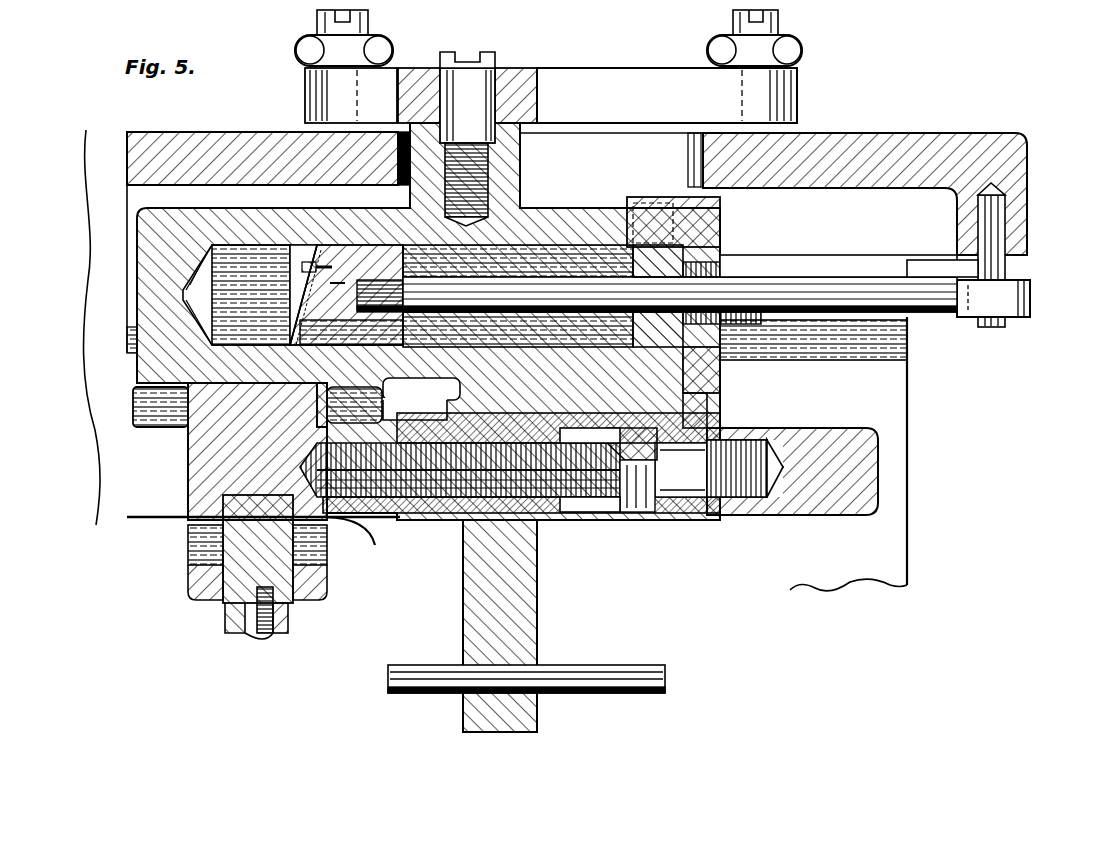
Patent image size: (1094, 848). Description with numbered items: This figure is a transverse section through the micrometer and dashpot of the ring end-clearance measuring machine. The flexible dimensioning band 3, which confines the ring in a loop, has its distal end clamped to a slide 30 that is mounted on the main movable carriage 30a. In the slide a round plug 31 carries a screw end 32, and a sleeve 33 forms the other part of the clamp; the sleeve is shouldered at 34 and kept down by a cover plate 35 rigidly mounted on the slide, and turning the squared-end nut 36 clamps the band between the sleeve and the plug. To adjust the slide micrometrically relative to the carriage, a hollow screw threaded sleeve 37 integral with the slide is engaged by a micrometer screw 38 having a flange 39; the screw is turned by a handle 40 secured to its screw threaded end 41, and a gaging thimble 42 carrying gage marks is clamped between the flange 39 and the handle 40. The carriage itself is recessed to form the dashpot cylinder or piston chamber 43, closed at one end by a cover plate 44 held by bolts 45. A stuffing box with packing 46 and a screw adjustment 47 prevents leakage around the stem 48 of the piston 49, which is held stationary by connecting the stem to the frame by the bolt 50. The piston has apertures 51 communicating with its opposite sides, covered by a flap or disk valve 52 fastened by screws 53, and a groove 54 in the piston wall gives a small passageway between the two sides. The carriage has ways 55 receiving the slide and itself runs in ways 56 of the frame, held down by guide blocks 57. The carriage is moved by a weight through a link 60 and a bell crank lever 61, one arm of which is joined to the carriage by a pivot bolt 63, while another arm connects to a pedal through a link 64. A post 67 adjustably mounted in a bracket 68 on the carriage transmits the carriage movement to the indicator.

The flexible dimensioning band 3 is at (160, 520).
The slide 30 is at (212, 462).
The main movable carriage 30a is at (155, 372).
The round plug 31 is at (196, 548).
The screw end 32 is at (266, 637).
The sleeve 33 is at (225, 600).
The shoulder 34 is at (300, 560).
The cover plate 35 is at (296, 605).
The nut 36 is at (232, 630).
The hollow sleeve 37 is at (375, 530).
The micrometer screw 38 is at (590, 512).
The flange 39 is at (625, 516).
The handle 40 is at (862, 452).
The screw threaded end 41 is at (730, 455).
The gaging thimble 42 is at (455, 530).
The piston chamber 43 is at (230, 262).
The cover plate 44 is at (722, 220).
The bolts 45 is at (655, 200).
The packing 46 is at (640, 322).
The screw adjustment 47 is at (760, 264).
The stem 48 is at (862, 292).
The piston 49 is at (308, 300).
The bolt 50 is at (1018, 275).
The apertures 51 is at (310, 325).
The flap or disk valve 52 is at (300, 283).
The screws 53 is at (303, 262).
The groove 54 is at (357, 250).
The ways 55 is at (175, 413).
The ways 56 is at (860, 332).
The guide blocks 57 is at (900, 345).
The link 60 is at (722, 50).
The bell crank lever 61 is at (630, 95).
The pivot bolt 63 is at (466, 88).
The link 64 is at (372, 45).
The post 67 is at (605, 682).
The bracket 68 is at (515, 715).